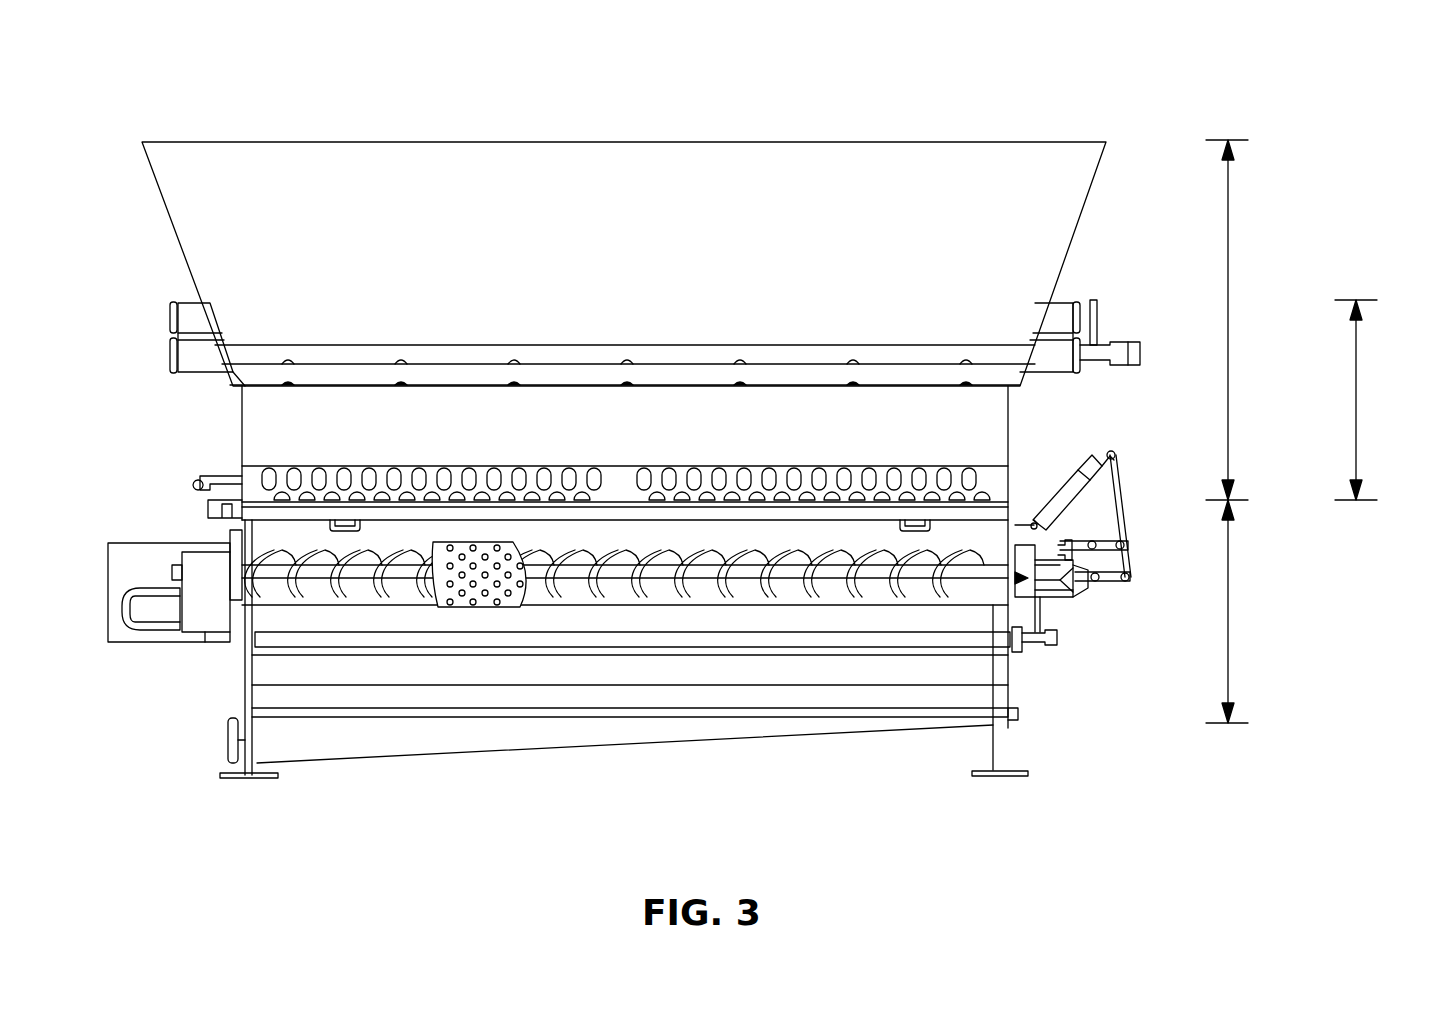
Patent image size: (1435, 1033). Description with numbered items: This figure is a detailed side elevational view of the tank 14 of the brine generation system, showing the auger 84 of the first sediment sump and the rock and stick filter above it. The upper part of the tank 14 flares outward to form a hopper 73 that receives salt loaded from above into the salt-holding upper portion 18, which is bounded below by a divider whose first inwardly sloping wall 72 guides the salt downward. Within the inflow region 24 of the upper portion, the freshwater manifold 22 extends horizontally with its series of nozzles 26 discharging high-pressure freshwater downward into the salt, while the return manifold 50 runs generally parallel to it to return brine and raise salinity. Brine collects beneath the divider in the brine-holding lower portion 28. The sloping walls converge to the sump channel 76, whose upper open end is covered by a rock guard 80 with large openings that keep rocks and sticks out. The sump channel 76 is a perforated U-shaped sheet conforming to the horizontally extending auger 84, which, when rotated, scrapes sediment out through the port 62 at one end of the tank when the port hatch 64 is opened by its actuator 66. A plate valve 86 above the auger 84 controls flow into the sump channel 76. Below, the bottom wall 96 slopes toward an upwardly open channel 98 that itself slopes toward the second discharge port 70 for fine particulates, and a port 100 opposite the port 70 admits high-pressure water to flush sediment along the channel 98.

The tank 14 is at (1073, 113).
The hopper 73 is at (638, 243).
The nozzles 26 is at (740, 364).
The return manifold 50 is at (190, 300).
The freshwater manifold 22 is at (197, 372).
The first inwardly sloping wall 72 is at (985, 407).
The rock guard 80 is at (960, 466).
The auger 84 is at (815, 572).
The sump channel 76 is at (475, 606).
The channel 98 is at (418, 742).
The bottom wall 96 is at (598, 752).
The second discharge port 70 is at (228, 740).
The port 100 is at (1020, 714).
The plate valve 86 is at (205, 625).
The port 62 is at (1061, 588).
The port hatch 64 is at (1075, 598).
The actuator 66 is at (1062, 490).
The salt-holding upper portion 18 is at (1230, 320).
The inflow region 24 is at (1358, 400).
The brine-holding lower portion 28 is at (1230, 602).